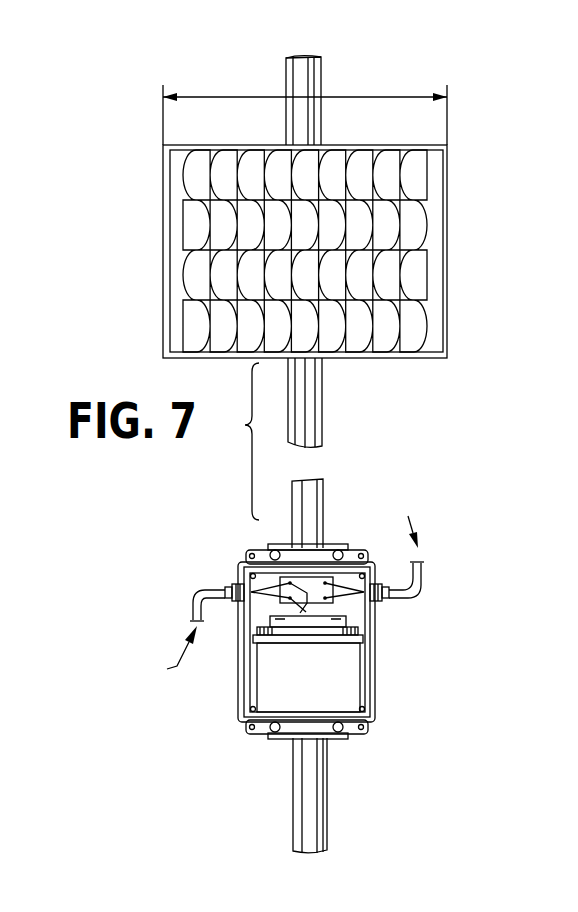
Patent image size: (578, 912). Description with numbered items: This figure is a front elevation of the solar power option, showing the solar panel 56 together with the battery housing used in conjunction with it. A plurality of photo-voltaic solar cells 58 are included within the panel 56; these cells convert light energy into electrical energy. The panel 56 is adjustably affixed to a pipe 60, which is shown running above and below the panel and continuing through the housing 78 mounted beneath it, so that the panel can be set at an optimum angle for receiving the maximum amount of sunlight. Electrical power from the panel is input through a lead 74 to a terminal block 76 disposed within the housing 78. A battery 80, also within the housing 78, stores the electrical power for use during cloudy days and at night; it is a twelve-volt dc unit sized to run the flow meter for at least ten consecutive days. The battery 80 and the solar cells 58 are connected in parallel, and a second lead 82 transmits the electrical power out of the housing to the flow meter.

The solar panel 56 is at (445, 268).
The photo-voltaic solar cells 58 is at (195, 173).
The pipe 60 is at (321, 405).
The lead 74 is at (417, 592).
The terminal block 76 is at (310, 585).
The housing 78 is at (376, 693).
The battery 80 is at (338, 662).
The second lead 82 is at (196, 595).